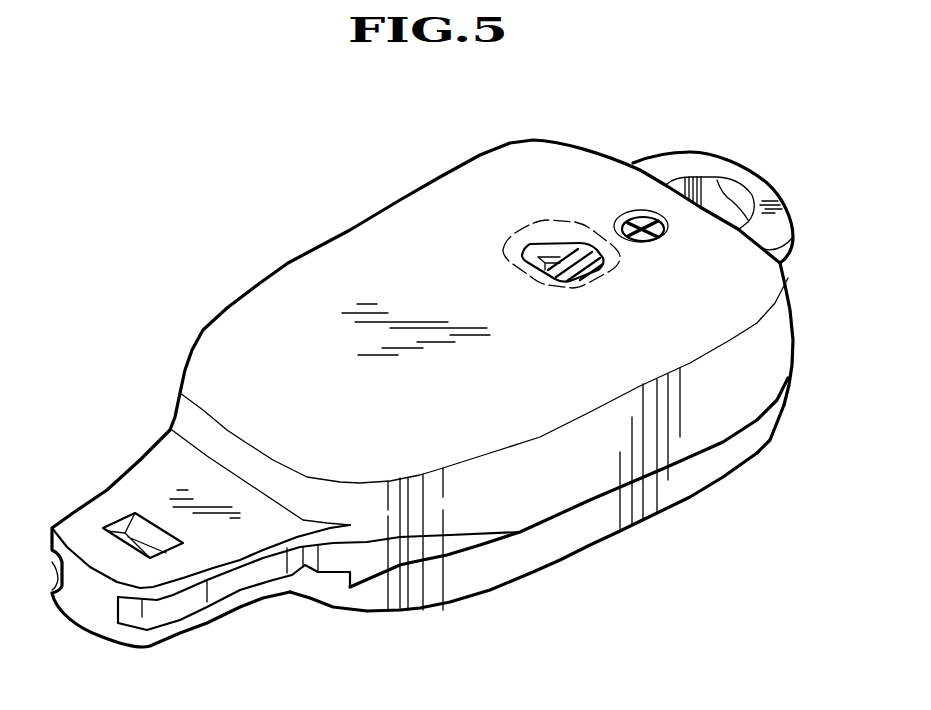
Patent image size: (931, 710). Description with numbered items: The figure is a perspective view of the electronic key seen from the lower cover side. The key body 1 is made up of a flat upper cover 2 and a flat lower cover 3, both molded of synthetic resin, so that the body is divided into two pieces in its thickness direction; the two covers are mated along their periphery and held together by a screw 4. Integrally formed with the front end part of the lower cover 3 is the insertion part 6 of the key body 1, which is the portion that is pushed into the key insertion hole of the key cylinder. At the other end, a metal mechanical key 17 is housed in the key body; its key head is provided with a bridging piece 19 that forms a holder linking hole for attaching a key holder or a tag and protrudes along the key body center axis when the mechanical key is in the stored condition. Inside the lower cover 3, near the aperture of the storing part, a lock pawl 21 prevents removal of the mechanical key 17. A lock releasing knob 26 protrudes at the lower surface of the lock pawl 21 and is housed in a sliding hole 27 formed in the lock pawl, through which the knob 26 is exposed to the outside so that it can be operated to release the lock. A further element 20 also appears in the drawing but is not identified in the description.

The key body 1 is at (282, 268).
The upper cover 2 is at (447, 603).
The lower cover 3 is at (255, 323).
The screw 4 is at (623, 214).
The insertion part 6 is at (98, 478).
The mechanical key 17 is at (722, 155).
The bridging piece 19 is at (762, 195).
The ring hole 20 is at (720, 183).
The lock pawl 21 is at (558, 252).
The lock releasing knob 26 is at (575, 252).
The sliding hole 27 is at (540, 243).